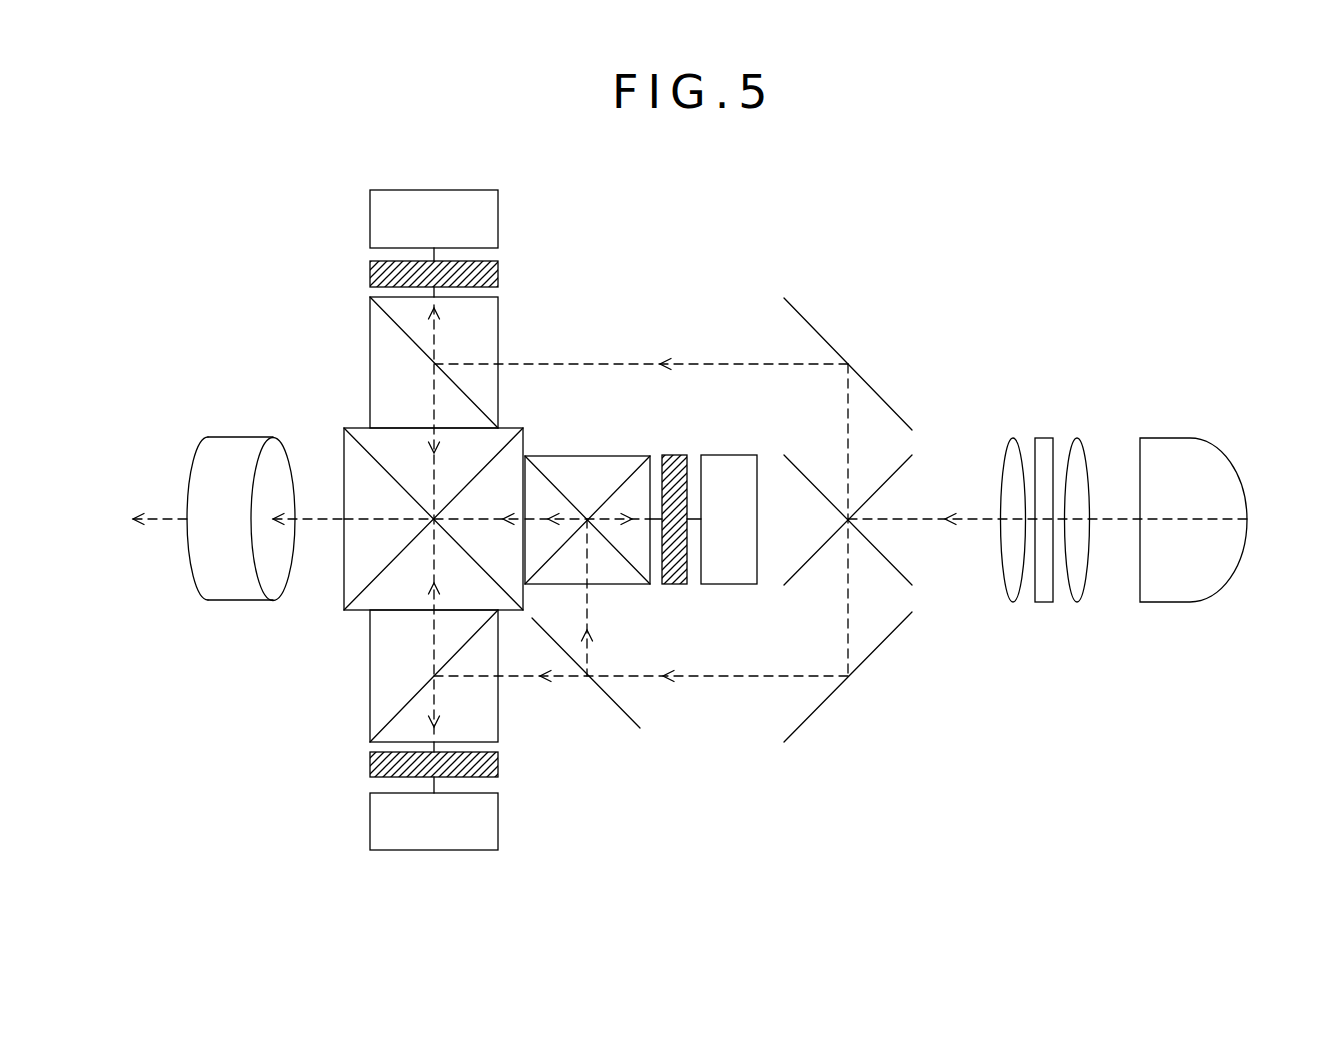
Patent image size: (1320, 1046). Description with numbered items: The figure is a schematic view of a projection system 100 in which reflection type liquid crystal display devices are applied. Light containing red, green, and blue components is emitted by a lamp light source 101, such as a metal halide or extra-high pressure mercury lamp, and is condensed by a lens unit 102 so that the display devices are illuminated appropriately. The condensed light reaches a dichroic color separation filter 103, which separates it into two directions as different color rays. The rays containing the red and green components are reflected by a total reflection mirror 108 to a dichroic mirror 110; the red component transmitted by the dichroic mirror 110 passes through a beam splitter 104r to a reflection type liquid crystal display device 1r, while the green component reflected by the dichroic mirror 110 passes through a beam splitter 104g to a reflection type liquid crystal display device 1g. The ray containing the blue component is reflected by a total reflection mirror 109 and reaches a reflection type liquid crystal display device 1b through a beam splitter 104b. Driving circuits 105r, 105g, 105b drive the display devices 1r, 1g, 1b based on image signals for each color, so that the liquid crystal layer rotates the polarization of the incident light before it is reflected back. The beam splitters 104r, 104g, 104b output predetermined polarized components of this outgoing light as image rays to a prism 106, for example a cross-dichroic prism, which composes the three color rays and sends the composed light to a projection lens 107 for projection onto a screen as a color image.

The projection system 100 is at (326, 182).
The lamp light source 101 is at (1180, 602).
The lens unit 102 is at (1000, 612).
The dichroic color separation filter 103 is at (903, 570).
The beam splitter 104b is at (498, 332).
The beam splitter 104g is at (623, 584).
The beam splitter 104r is at (498, 727).
The driving circuit 105b is at (498, 228).
The driving circuit 105g is at (723, 455).
The driving circuit 105r is at (498, 808).
The prism 106 is at (350, 450).
The projection lens 107 is at (238, 437).
The total reflection mirror 108 is at (810, 717).
The total reflection mirror 109 is at (823, 333).
The dichroic mirror 110 is at (640, 718).
The reflection type liquid crystal display device 1b is at (498, 274).
The reflection type liquid crystal display device 1g is at (672, 455).
The reflection type liquid crystal display device 1r is at (498, 762).